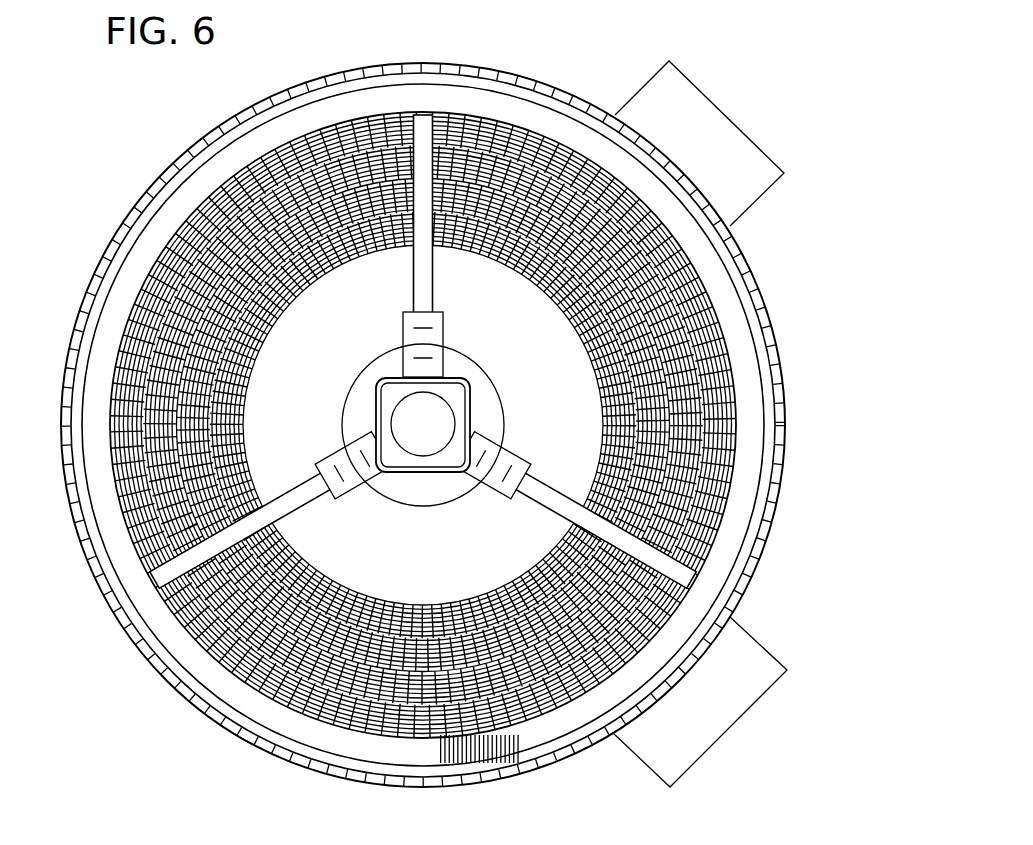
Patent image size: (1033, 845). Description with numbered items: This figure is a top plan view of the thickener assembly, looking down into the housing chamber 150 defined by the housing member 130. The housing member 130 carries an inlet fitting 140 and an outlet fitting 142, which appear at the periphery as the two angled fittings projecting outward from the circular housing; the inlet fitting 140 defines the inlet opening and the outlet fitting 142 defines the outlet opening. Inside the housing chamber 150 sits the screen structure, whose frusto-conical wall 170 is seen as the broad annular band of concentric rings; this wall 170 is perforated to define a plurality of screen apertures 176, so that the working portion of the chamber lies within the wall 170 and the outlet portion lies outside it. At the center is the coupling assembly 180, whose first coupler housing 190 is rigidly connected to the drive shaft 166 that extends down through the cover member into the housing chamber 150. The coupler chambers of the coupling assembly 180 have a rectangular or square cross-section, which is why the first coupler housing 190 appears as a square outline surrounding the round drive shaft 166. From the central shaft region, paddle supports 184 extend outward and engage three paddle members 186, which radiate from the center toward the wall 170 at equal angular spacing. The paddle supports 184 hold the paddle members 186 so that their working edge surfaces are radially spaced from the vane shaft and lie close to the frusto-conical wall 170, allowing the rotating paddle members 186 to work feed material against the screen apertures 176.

The housing member 130 is at (190, 155).
The wall 170 is at (212, 220).
The screen apertures 176 is at (183, 320).
The paddle members 186 is at (423, 124).
The paddle supports 184 is at (437, 328).
The housing chamber 150 is at (333, 358).
The coupling assembly 180 is at (483, 383).
The first coupler housing 190 is at (468, 402).
The drive shaft 166 is at (437, 422).
The inlet fitting 140 is at (720, 127).
The outlet fitting 142 is at (712, 722).